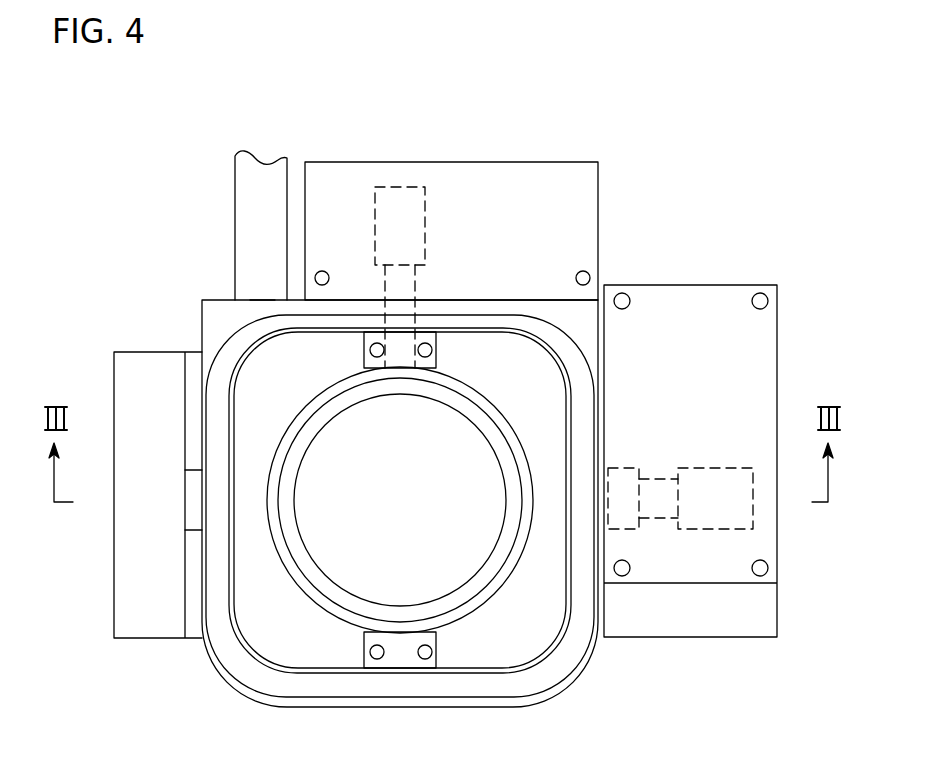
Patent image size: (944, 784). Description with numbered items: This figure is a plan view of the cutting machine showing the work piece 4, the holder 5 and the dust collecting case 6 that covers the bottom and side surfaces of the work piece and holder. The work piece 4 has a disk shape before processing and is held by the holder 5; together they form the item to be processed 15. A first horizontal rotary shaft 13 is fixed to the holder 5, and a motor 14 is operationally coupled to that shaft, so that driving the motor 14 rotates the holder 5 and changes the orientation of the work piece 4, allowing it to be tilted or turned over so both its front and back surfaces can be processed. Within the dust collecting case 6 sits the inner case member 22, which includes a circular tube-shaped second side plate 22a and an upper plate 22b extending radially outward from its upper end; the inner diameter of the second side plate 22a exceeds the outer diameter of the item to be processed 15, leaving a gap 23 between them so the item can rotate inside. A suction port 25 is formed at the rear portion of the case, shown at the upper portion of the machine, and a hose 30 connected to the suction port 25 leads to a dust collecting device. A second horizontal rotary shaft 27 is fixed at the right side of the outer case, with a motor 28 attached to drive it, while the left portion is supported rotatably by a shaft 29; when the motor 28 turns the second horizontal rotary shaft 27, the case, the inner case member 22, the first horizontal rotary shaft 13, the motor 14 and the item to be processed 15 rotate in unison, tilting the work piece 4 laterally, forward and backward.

The work piece 4 is at (442, 582).
The holder 5 is at (340, 603).
The dust collecting case 6 is at (551, 332).
The first horizontal rotary shaft 13 is at (415, 287).
The motor 14 is at (425, 217).
The item to be processed 15 is at (407, 580).
The inner case member 22 is at (497, 576).
The second side plate 22a is at (316, 592).
The upper plate 22b is at (535, 618).
The gap 23 is at (290, 577).
The suction port 25 is at (262, 297).
The second horizontal rotary shaft 27 is at (620, 468).
The motor 28 is at (723, 468).
The shaft 29 is at (197, 468).
The hose 30 is at (235, 183).